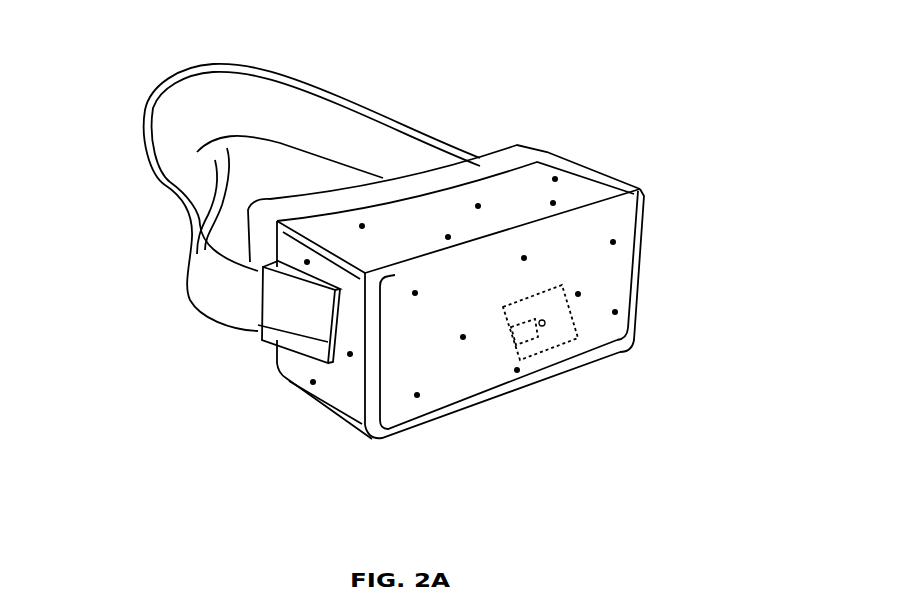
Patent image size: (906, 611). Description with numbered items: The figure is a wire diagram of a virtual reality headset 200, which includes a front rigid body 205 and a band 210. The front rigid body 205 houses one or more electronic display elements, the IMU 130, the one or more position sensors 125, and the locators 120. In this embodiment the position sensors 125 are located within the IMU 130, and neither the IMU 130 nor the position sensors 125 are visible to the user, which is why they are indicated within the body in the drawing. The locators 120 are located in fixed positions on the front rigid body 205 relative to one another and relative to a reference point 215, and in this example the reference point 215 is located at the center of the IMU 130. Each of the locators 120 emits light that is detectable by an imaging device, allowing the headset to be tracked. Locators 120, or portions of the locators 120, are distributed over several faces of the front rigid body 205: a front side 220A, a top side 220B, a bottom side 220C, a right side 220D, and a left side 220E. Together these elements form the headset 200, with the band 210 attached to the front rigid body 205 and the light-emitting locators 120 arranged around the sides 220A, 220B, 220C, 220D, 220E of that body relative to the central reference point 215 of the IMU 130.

The VR headset 200 is at (78, 63).
The band 210 is at (398, 117).
The front rigid body 205 is at (442, 307).
The front side 220A is at (404, 414).
The top side 220B is at (339, 227).
The bottom side 220C is at (307, 414).
The right side 220D is at (342, 383).
The left side 220E is at (613, 179).
The locators 120 is at (619, 311).
The position sensors 125 is at (521, 344).
The IMU 130 is at (587, 336).
The reference point 215 is at (545, 331).